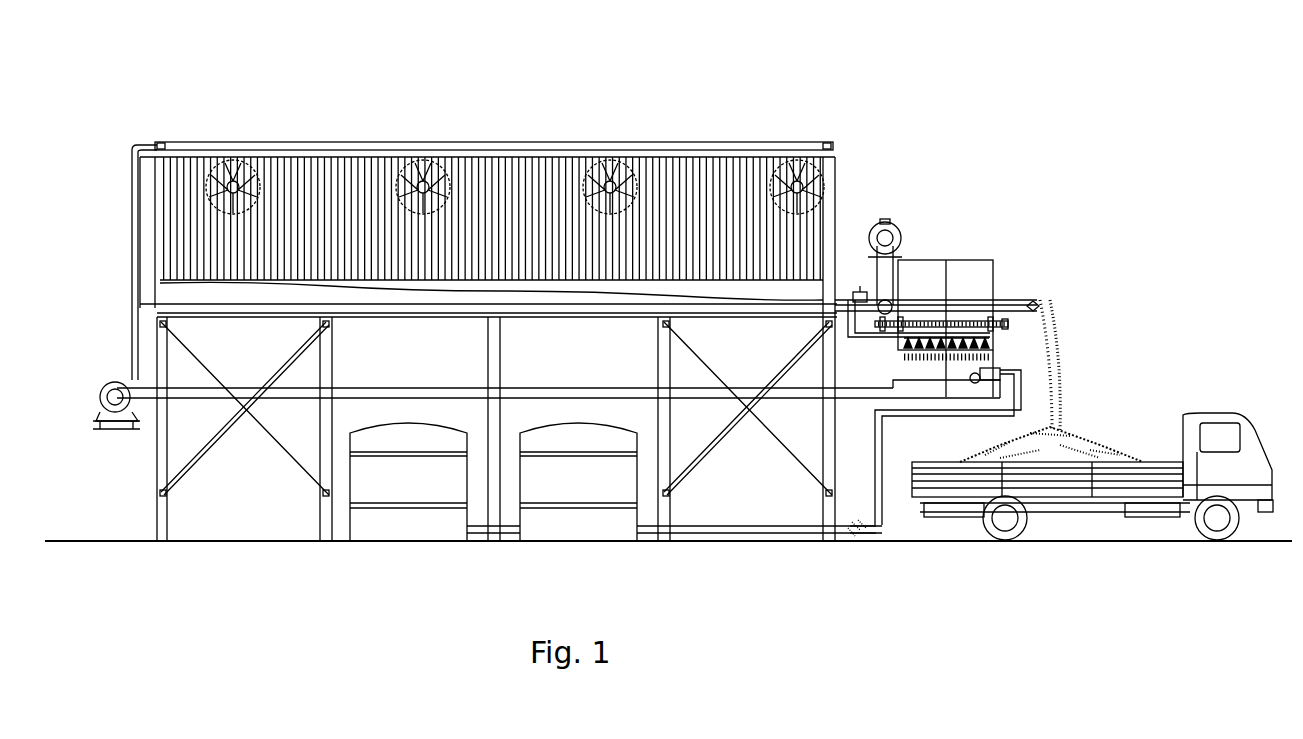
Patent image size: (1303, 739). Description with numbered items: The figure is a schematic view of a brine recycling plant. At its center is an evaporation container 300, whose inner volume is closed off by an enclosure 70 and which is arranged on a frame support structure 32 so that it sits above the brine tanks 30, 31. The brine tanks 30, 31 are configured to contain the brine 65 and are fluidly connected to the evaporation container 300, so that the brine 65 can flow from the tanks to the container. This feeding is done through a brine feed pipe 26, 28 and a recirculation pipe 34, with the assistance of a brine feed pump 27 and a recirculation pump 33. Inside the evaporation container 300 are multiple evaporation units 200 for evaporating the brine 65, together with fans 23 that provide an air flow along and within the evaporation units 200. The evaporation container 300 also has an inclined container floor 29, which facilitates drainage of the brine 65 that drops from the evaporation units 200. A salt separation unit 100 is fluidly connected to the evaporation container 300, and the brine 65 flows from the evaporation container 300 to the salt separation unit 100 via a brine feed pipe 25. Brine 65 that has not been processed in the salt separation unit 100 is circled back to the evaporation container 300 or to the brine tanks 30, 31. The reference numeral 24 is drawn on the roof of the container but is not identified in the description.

The evaporation container 300 is at (513, 91).
The evaporation units 200 is at (485, 178).
The fans 23 is at (633, 160).
The roof duct 24 is at (725, 143).
The enclosure 70 is at (836, 178).
The salt separation unit 100 is at (972, 256).
The recirculation pipe 34 is at (130, 202).
The recirculation pump 33 is at (112, 377).
The inclined container floor 29 is at (422, 313).
The frame support structure 32 is at (165, 513).
The brine tank 31 is at (408, 482).
The brine tank 30 is at (578, 482).
The brine feed pipe 28 is at (727, 527).
The brine feed pipe 25 is at (868, 338).
The brine feed pipe 26 is at (882, 445).
The brine feed pump 27 is at (882, 528).
The brine 65 is at (948, 357).